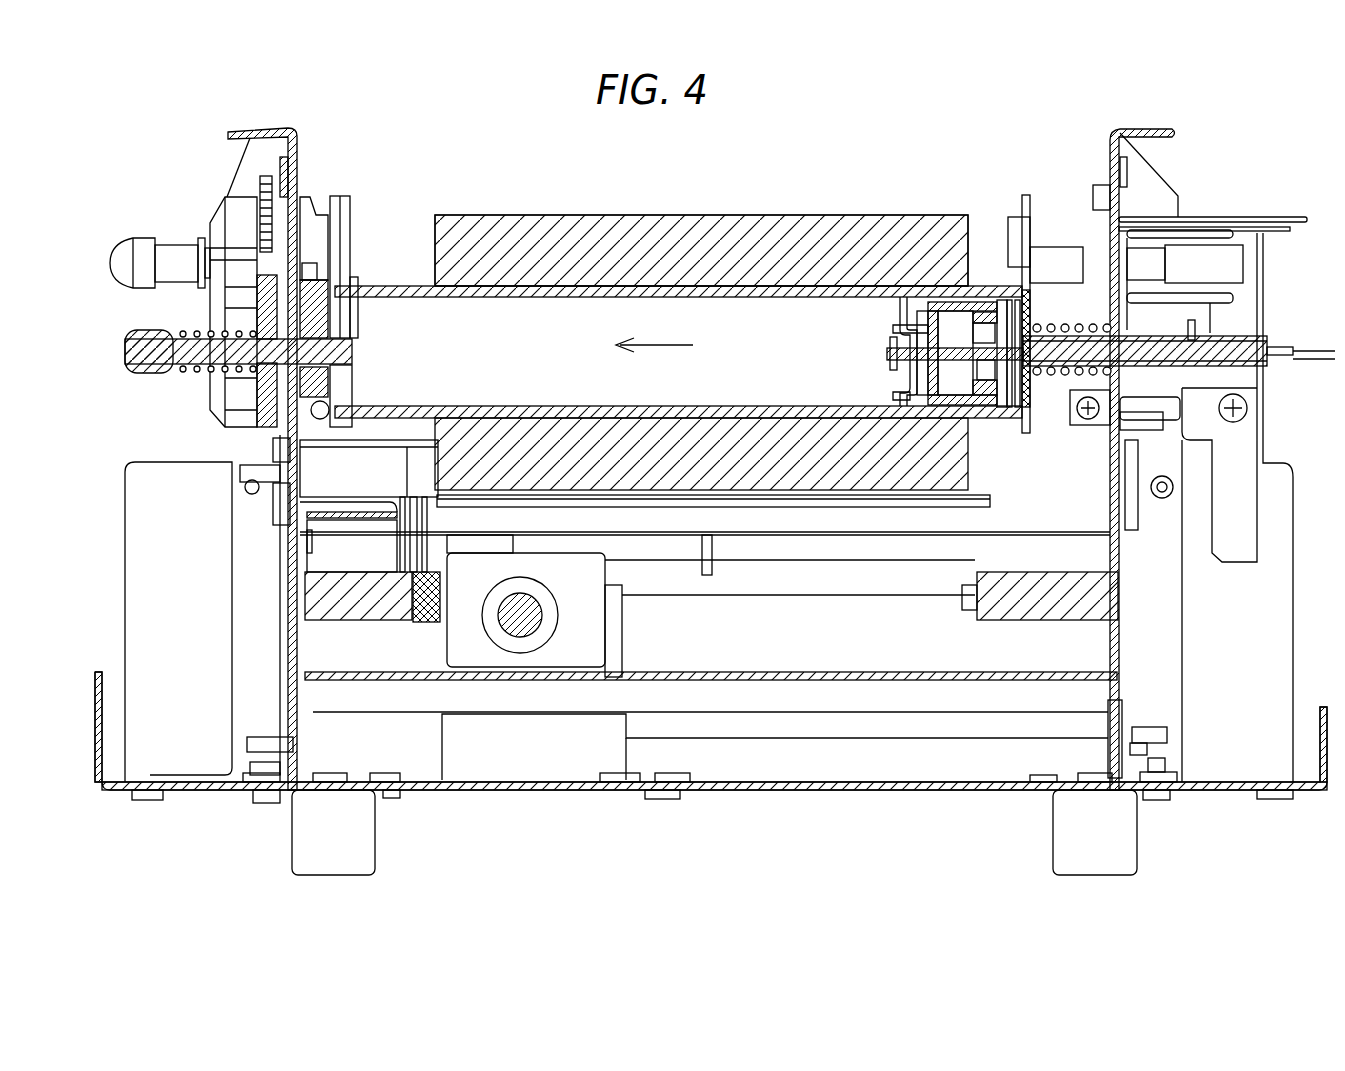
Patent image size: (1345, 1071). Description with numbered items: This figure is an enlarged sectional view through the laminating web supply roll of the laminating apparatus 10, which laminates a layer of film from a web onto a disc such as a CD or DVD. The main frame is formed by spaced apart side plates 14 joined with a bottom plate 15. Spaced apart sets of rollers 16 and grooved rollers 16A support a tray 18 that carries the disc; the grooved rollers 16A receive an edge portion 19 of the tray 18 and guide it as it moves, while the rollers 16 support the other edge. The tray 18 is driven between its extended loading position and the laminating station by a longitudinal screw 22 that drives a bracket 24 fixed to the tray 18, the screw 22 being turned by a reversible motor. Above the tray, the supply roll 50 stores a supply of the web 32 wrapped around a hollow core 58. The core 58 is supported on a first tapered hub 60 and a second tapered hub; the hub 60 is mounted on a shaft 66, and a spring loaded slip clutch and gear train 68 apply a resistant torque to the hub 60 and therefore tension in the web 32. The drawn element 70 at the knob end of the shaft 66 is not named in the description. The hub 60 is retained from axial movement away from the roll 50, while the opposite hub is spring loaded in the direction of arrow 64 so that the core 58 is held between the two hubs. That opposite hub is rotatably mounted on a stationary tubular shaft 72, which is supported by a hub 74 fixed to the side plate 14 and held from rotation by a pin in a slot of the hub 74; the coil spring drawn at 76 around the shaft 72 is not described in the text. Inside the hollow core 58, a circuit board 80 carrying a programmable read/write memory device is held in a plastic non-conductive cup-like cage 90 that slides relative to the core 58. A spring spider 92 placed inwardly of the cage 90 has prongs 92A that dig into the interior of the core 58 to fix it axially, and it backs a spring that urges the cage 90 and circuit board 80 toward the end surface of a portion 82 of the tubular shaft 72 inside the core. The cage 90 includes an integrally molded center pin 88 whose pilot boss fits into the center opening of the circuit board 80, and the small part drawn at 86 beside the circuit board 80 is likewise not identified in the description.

The laminating apparatus 10 is at (678, 203).
The side plates 14 is at (298, 188).
The bottom plate 15 is at (733, 792).
The rollers 16 is at (965, 613).
The grooved rollers 16A is at (424, 618).
The tray 18 is at (782, 520).
The edge portion 19 is at (425, 508).
The longitudinal screw 22 is at (525, 630).
The bracket 24 is at (583, 617).
The web 32 is at (690, 228).
The supply roll 50 is at (552, 230).
The hollow core 58 is at (409, 284).
The first tapered hub 60 is at (353, 306).
The arrow 64 is at (677, 348).
The shaft 66 is at (197, 352).
The spring loaded slip clutch and gear train 68 is at (259, 441).
The knob hub assembly 70 is at (215, 223).
The tubular shaft 72 is at (1083, 330).
The hub 74 is at (1222, 333).
The compression spring 76 is at (1065, 324).
The circuit board 80 is at (975, 305).
The portion of tubular shaft 82 is at (1010, 400).
The clutch ring 86 is at (990, 305).
The center pin 88 is at (888, 353).
The cage 90 is at (935, 312).
The spider 92 is at (897, 321).
The prongs 92A is at (897, 400).